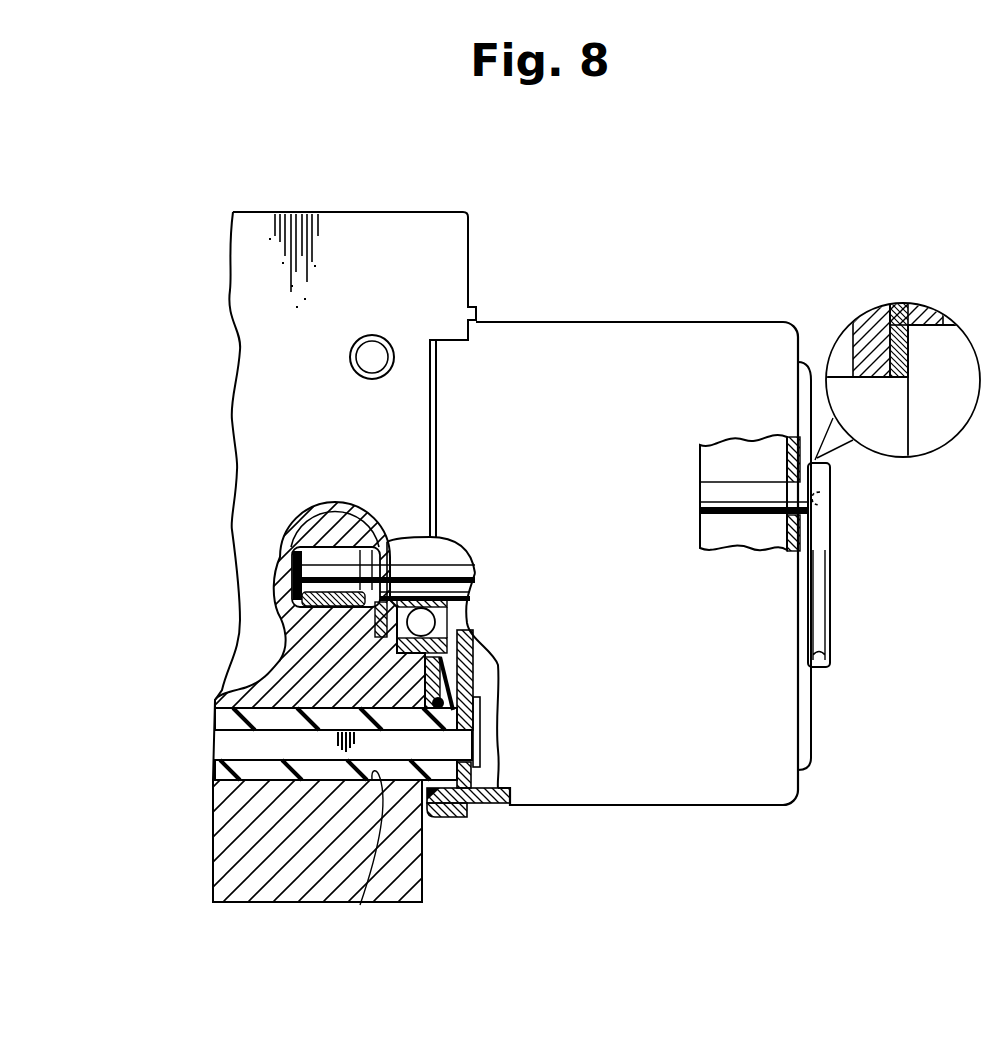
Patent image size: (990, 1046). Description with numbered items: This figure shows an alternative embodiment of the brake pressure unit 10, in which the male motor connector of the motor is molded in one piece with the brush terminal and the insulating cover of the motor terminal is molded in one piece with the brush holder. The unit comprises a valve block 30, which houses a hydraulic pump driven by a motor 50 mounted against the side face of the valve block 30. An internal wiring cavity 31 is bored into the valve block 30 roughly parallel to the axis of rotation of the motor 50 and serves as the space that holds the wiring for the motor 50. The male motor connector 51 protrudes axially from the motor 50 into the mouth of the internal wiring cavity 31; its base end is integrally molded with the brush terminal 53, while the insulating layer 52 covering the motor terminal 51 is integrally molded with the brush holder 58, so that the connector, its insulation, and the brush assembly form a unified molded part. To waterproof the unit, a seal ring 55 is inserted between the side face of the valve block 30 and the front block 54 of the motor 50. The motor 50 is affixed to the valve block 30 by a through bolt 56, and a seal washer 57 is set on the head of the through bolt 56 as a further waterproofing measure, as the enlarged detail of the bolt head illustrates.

The brake pressure unit 10 is at (478, 215).
The valve block 30 is at (240, 880).
The internal wiring cavity 31 is at (360, 905).
The motor 50 is at (640, 325).
The male motor connector 51 is at (225, 743).
The insulating layer 52 is at (218, 768).
The brush terminal 53 is at (482, 728).
The front block 54 is at (463, 818).
The seal ring 55 is at (433, 817).
The through bolt 56 is at (887, 447).
The seal washer 57 is at (898, 305).
The brush holder 58 is at (467, 677).